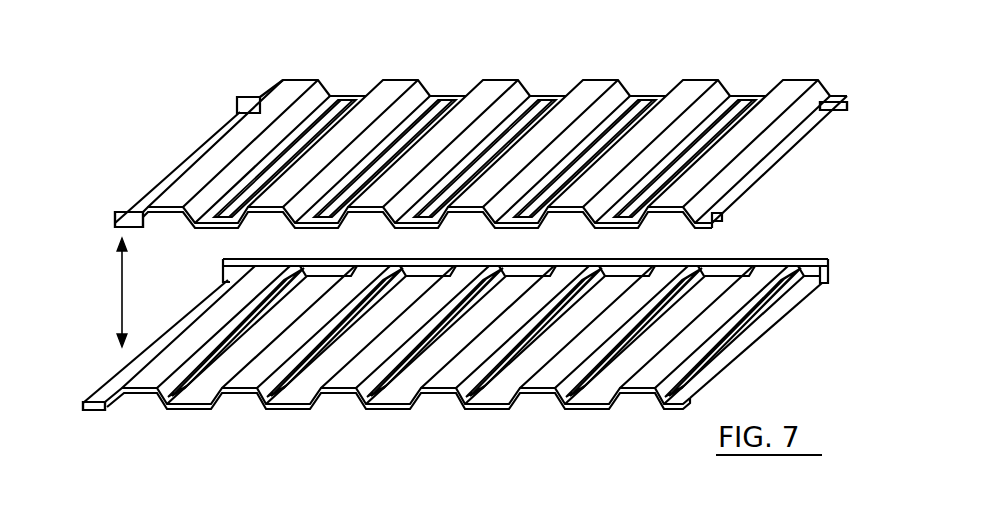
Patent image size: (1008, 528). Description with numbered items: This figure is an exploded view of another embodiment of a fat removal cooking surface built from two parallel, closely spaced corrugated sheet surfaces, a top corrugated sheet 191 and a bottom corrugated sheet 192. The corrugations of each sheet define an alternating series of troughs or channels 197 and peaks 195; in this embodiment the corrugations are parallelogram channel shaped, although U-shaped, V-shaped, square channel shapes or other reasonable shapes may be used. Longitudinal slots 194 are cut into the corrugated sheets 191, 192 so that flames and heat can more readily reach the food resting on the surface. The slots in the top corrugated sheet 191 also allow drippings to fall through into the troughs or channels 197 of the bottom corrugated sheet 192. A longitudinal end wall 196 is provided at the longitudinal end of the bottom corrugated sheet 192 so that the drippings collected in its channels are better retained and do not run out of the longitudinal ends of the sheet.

The top corrugated sheet 191 is at (785, 178).
The bottom corrugated sheet 192 is at (768, 365).
The longitudinal slots 194 is at (738, 98).
The peaks 195 is at (300, 85).
The wall 196 is at (720, 264).
The troughs 197 is at (432, 100).